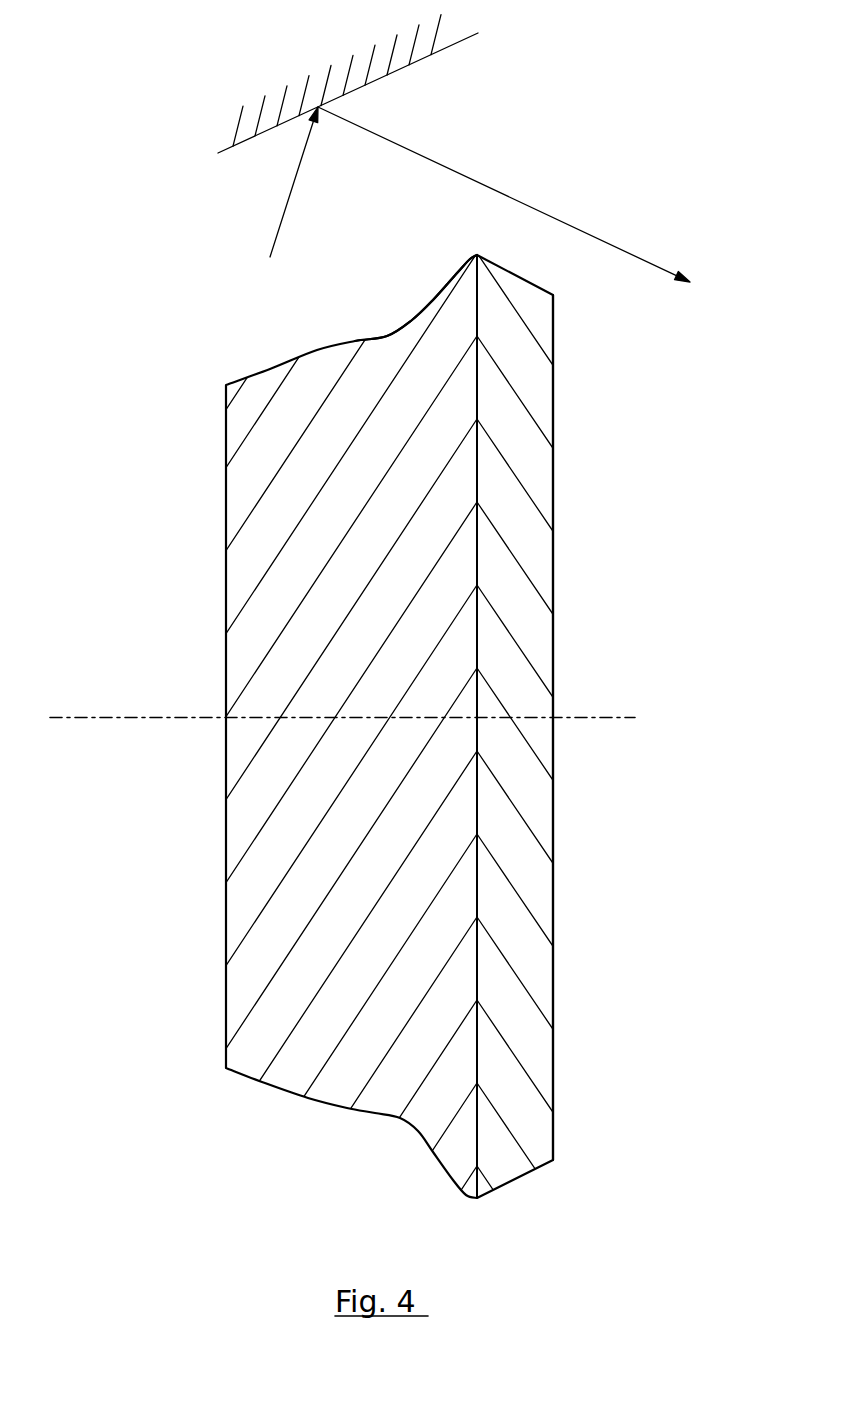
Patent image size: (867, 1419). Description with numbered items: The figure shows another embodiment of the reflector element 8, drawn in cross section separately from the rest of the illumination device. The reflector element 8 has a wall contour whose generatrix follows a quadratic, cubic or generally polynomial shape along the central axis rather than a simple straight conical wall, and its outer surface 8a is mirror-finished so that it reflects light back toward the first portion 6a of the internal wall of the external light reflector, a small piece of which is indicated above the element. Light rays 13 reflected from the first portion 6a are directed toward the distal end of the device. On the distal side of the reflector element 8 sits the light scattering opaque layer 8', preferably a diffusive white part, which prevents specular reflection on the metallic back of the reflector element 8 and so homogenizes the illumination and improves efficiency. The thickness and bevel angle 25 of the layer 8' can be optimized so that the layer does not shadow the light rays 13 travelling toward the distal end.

The first portion of the internal wall 6a is at (225, 148).
The light rays 13 is at (455, 172).
The reflector element 8 is at (373, 711).
The outer surface of the reflector element 8a is at (445, 283).
The opaque layer 8' is at (612, 727).
The bevel angle 25 is at (536, 268).